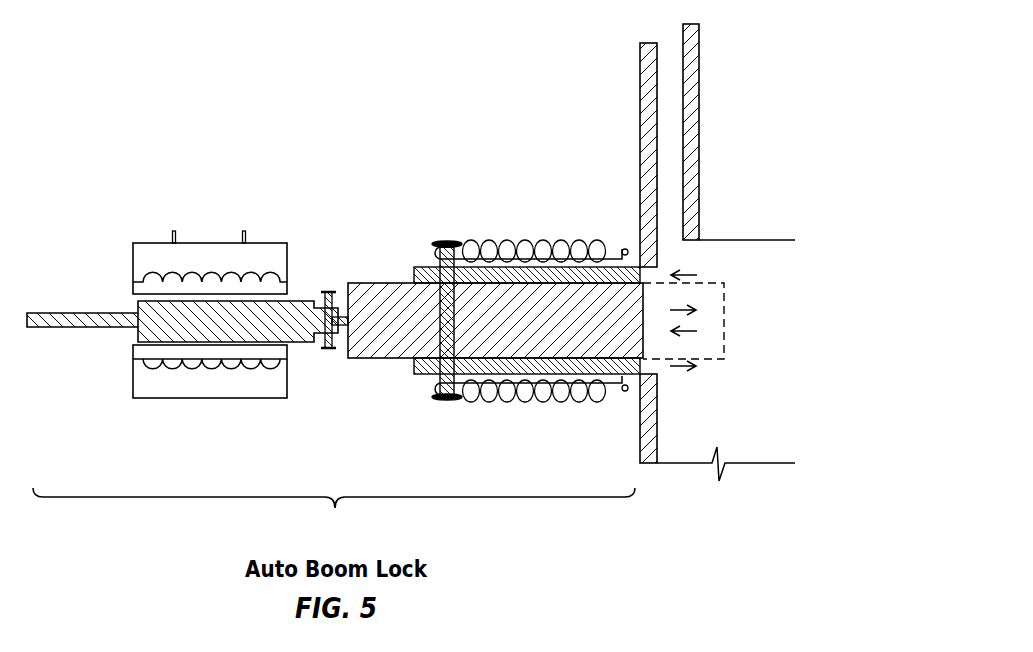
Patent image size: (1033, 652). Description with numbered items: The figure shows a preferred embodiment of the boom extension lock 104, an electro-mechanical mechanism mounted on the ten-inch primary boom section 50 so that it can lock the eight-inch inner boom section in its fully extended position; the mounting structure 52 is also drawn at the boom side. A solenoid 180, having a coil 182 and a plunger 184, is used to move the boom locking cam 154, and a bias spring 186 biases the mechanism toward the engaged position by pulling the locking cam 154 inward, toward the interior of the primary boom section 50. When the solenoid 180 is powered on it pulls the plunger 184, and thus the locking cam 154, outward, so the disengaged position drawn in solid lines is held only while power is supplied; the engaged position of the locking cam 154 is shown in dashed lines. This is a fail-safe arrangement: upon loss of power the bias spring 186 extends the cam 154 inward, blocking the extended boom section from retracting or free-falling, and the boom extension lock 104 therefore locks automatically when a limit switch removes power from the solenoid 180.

The boom extension lock 104 is at (334, 513).
The solenoid 180 is at (153, 243).
The coil 182 is at (150, 268).
The plunger 184 is at (155, 312).
The boom locking cam 154 is at (600, 330).
The bias spring 186 is at (530, 240).
The primary boom section 50 is at (640, 175).
The plate 52 is at (683, 113).